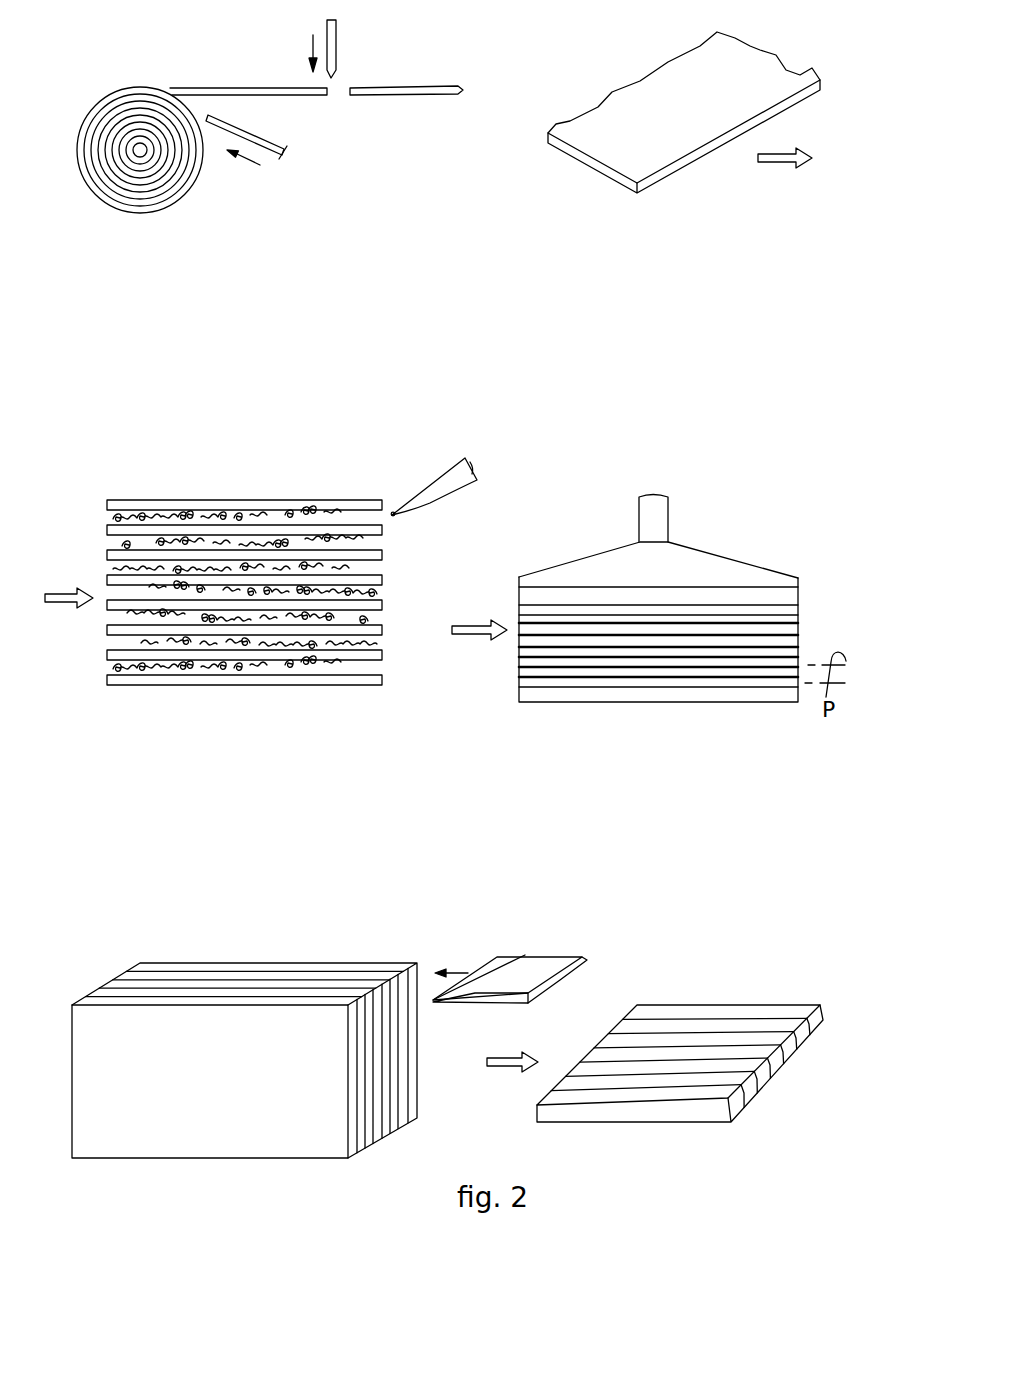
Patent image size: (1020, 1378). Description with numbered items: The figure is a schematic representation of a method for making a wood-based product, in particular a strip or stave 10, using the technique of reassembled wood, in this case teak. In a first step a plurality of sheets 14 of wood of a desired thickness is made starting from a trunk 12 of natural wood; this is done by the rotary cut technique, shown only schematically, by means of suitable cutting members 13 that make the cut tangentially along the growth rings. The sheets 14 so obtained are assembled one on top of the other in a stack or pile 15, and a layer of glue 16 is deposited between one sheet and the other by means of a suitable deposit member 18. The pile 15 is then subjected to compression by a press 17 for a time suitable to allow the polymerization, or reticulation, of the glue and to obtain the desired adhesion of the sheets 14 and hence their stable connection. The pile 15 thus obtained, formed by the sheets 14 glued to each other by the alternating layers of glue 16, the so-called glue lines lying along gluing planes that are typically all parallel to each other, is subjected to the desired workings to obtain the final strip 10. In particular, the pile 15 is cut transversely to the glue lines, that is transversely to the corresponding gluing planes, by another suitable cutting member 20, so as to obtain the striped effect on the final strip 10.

The strip 10 is at (748, 990).
The trunk 12 is at (117, 190).
The cutting members 13 is at (334, 55).
The sheets 14 is at (592, 155).
The pile 15 is at (385, 587).
The layer of glue 16 is at (313, 520).
The press 17 is at (573, 561).
The deposit member 18 is at (442, 483).
The cutting member 20 is at (542, 970).